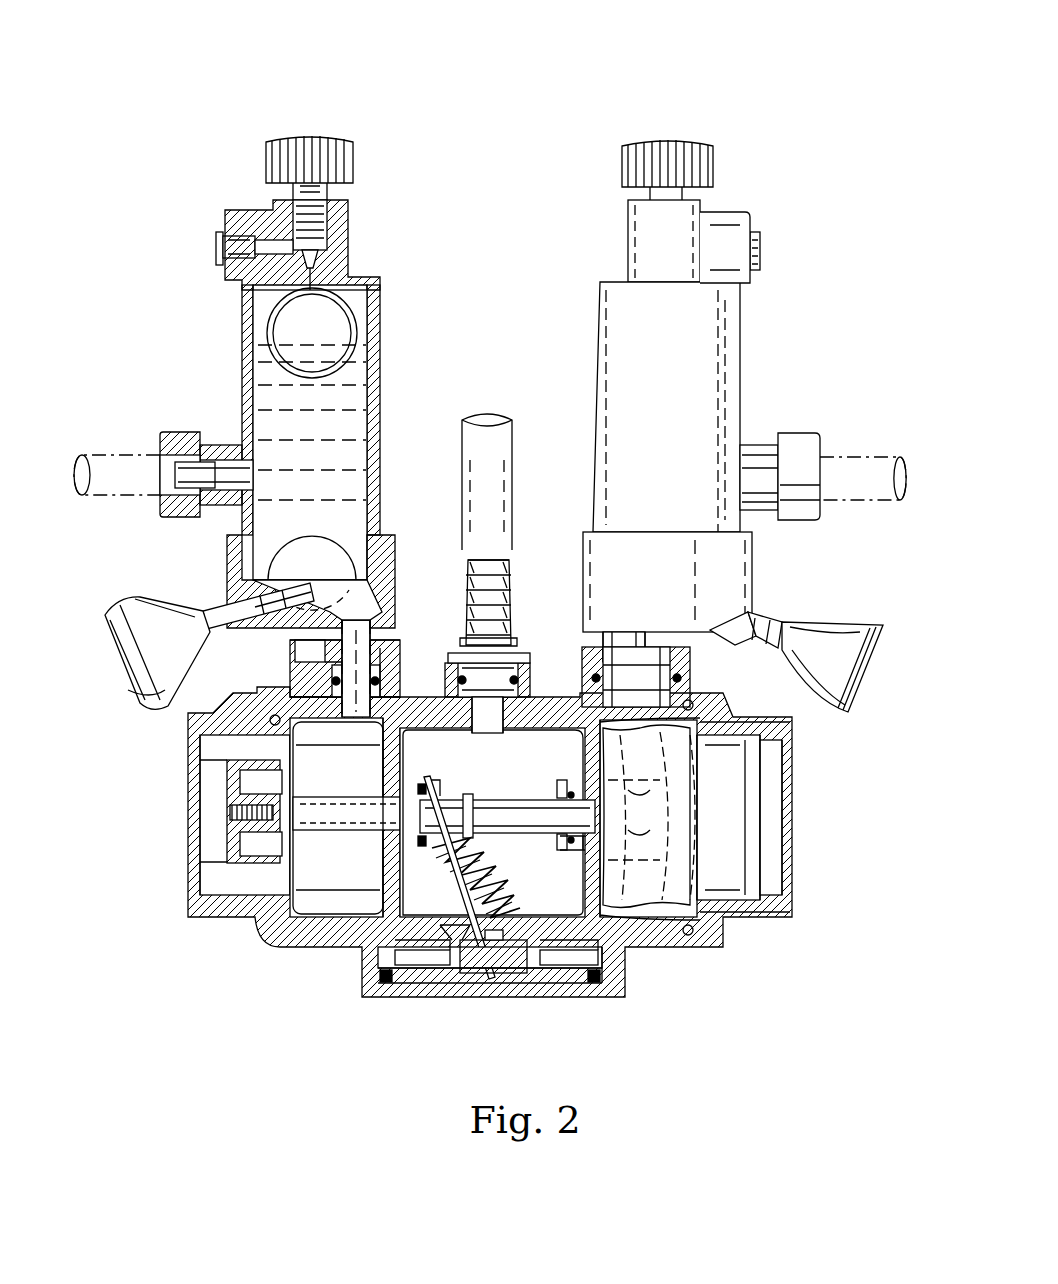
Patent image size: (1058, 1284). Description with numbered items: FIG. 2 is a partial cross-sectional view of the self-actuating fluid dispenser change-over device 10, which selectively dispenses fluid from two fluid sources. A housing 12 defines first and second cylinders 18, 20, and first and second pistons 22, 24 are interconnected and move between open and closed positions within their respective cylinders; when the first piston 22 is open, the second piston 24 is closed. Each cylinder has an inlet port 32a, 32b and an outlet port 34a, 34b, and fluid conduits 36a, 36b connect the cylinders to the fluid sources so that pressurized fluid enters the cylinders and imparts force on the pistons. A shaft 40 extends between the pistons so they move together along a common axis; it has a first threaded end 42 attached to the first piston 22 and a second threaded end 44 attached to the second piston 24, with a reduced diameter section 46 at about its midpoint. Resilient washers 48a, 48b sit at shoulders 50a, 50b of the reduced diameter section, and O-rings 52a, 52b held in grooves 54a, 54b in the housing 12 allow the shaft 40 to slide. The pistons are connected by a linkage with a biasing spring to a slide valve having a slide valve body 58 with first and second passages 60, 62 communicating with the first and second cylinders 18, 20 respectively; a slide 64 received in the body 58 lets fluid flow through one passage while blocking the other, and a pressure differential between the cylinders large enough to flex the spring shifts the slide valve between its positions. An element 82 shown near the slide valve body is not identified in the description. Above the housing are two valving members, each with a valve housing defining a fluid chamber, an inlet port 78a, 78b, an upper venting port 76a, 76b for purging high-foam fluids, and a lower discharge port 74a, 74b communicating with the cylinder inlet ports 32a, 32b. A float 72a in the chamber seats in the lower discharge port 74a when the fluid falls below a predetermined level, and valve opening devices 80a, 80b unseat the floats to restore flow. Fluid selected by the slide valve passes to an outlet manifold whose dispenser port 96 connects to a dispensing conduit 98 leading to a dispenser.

The change-over device 10 is at (681, 56).
The housing 12 is at (285, 946).
The first cylinder 18 is at (345, 900).
The second cylinder 20 is at (632, 922).
The first piston 22 is at (245, 882).
The second piston 24 is at (652, 816).
The inlet port 32a is at (278, 737).
The inlet port 32b is at (645, 695).
The outlet port 34a is at (388, 956).
The outlet port 34b is at (600, 962).
The fluid conduit 36a is at (108, 450).
The fluid conduit 36b is at (862, 488).
The shaft 40 is at (575, 808).
The first threaded end 42 is at (228, 822).
The second threaded end 44 is at (712, 772).
The reduced diameter section 46 is at (456, 816).
The resilient washer 48a is at (356, 830).
The resilient washer 48b is at (485, 808).
The shoulder 50a is at (393, 803).
The shoulder 50b is at (478, 802).
The O-ring 52a is at (416, 783).
The O-ring 52b is at (580, 840).
The groove 54a is at (436, 782).
The groove 54b is at (580, 862).
The slide valve body 58 is at (508, 955).
The first passage 60 is at (436, 958).
The second passage 62 is at (536, 958).
The slide 64 is at (562, 958).
The float 72a is at (320, 312).
The lower discharge port 74a is at (352, 640).
The lower discharge port 74b is at (615, 638).
The upper venting port 76a is at (218, 240).
The upper venting port 76b is at (770, 256).
The inlet port 78a is at (166, 436).
The inlet port 78b is at (828, 445).
The valve opening device 80a is at (210, 610).
The valve opening device 80b is at (828, 603).
The pivot 82 is at (458, 962).
The dispenser port 96 is at (497, 712).
The dispensing conduit 98 is at (500, 446).